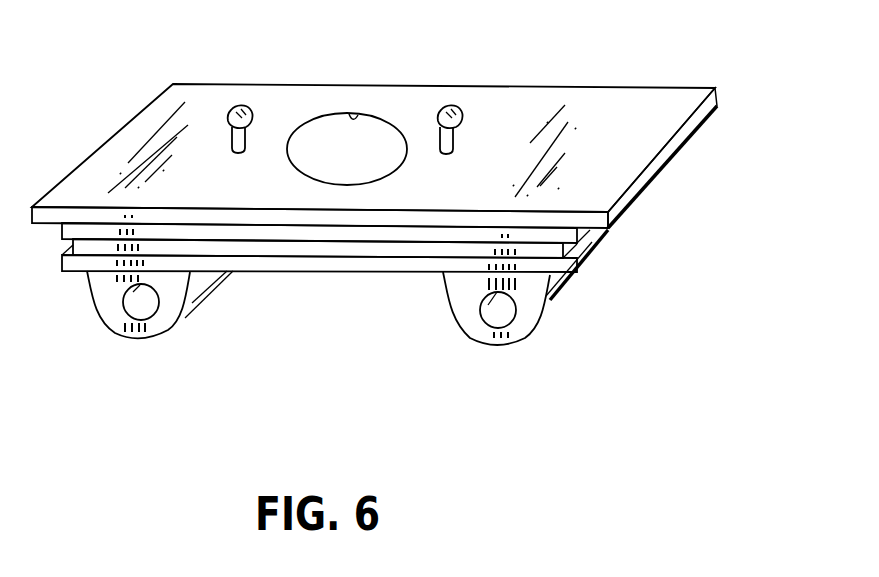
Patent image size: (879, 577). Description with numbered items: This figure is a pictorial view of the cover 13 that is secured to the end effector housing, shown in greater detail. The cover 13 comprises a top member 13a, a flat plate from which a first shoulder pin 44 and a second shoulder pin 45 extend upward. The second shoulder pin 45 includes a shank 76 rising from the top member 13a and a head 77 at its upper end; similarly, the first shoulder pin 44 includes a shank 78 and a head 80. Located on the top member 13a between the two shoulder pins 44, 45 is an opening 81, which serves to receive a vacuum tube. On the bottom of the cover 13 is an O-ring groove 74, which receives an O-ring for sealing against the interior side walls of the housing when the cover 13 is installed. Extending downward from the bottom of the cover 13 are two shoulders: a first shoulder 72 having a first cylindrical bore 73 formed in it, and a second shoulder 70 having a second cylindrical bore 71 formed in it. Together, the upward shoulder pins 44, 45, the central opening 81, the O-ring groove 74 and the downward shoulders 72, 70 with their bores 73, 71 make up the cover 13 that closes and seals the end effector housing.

The cover 13 is at (395, 124).
The top member 13a is at (636, 163).
The first shoulder pin 44 is at (210, 89).
The second shoulder pin 45 is at (488, 86).
The second shoulder 70 is at (497, 332).
The second cylindrical bore 71 is at (493, 315).
The first shoulder 72 is at (143, 330).
The first cylindrical bore 73 is at (134, 305).
The O-ring groove 74 is at (555, 252).
The shank 76 is at (453, 138).
The head 77 is at (462, 110).
The shank 78 is at (232, 140).
The head 80 is at (252, 110).
The opening 81 is at (357, 120).